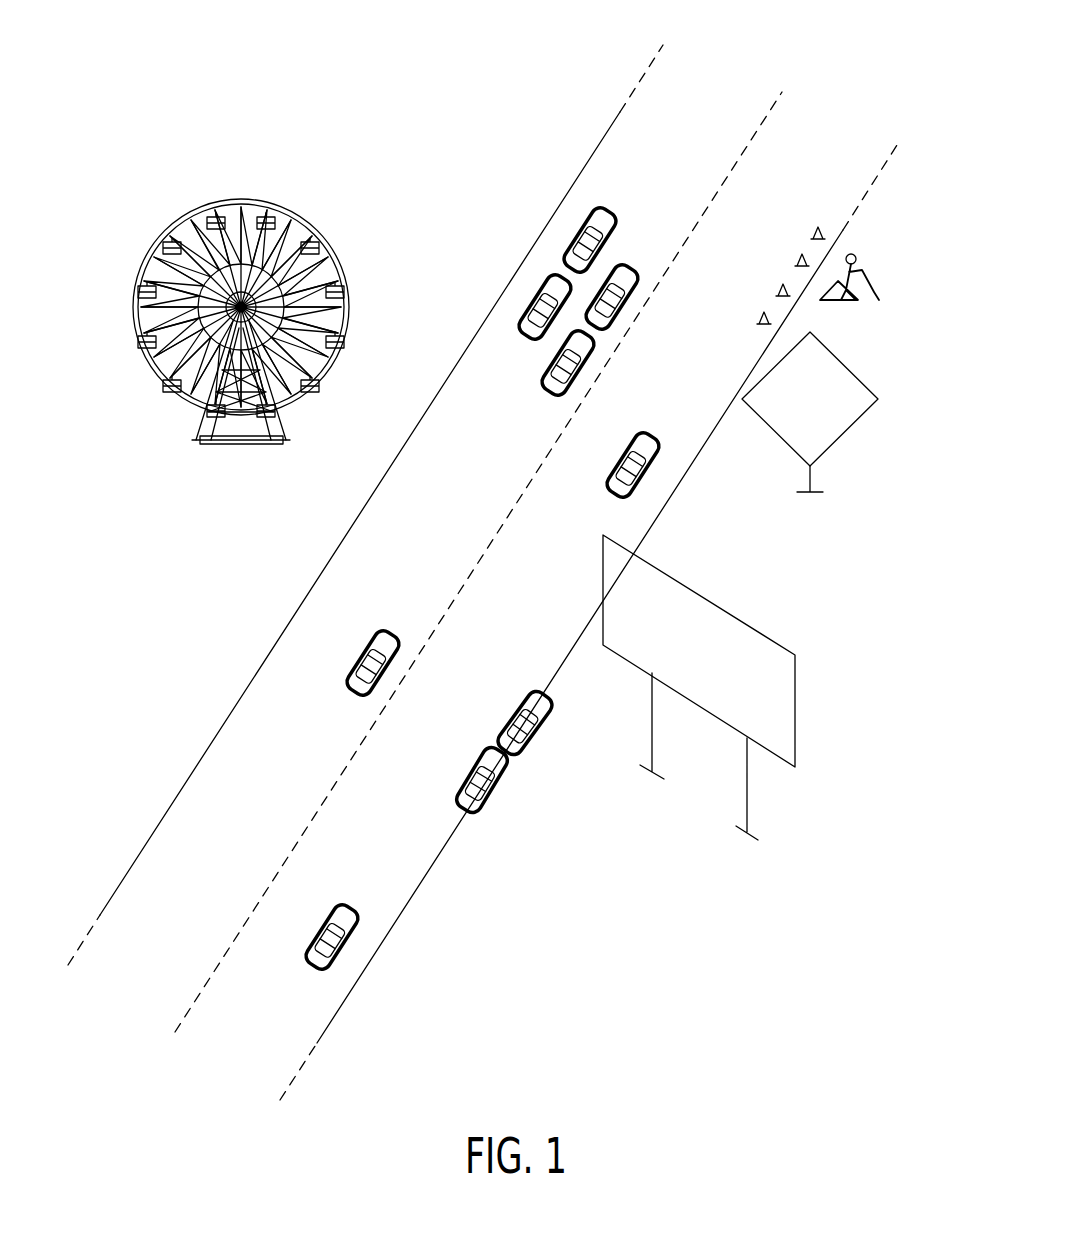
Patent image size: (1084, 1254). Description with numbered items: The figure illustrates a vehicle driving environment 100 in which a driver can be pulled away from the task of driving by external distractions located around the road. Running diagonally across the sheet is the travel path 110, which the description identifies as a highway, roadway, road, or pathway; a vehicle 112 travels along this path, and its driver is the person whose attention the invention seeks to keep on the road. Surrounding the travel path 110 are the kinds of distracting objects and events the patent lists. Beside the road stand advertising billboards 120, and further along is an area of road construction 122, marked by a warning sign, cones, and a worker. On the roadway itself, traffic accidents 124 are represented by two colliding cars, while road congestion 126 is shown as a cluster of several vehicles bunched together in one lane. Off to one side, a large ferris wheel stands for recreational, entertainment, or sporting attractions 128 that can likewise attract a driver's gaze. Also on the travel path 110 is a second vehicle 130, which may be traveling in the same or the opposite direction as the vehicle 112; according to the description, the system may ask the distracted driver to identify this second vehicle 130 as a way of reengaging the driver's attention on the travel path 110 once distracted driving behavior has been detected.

The vehicle driving environment 100 is at (298, 60).
The travel path 110 is at (172, 805).
The vehicle 112 is at (342, 950).
The advertising billboards 120 is at (797, 712).
The road construction 122 is at (888, 270).
The traffic accidents 124 is at (544, 776).
The road congestion 126 is at (546, 261).
The recreational/entertainment/sporting attractions 128 is at (152, 372).
The second vehicle 130 is at (640, 480).